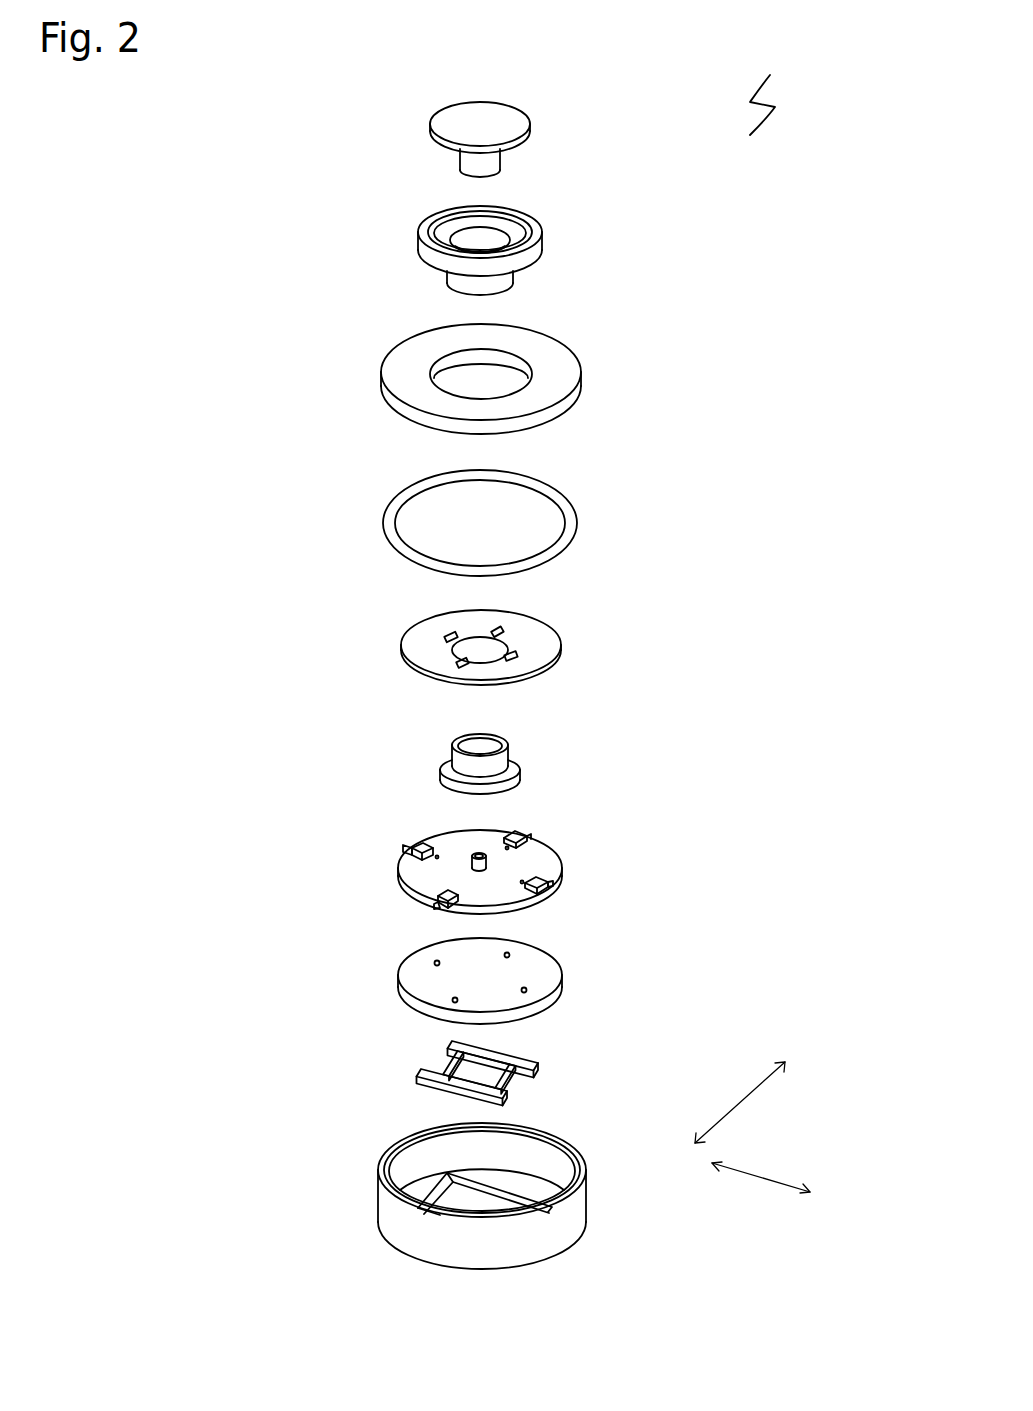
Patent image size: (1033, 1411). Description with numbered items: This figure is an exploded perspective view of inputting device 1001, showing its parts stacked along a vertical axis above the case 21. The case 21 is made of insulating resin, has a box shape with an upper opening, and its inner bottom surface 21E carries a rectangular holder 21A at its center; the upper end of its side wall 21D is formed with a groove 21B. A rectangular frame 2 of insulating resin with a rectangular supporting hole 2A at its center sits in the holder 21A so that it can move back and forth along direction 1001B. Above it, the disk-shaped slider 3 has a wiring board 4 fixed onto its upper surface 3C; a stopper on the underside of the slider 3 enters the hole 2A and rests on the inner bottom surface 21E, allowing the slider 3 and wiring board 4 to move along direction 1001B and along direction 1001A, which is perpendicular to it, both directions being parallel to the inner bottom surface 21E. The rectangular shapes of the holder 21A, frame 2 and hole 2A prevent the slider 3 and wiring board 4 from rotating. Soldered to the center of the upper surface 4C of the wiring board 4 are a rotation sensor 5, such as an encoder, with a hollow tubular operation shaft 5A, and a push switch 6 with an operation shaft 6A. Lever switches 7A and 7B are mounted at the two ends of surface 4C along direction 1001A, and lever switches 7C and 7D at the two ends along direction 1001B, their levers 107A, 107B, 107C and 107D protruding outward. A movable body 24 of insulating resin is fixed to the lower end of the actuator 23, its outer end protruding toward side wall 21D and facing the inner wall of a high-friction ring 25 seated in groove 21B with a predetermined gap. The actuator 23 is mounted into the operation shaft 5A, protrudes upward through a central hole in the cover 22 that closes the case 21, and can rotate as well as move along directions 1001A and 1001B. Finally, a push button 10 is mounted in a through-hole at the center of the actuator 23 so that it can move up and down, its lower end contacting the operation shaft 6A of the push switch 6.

The inputting device 1001 is at (780, 88).
The direction 1001A is at (735, 1107).
The direction 1001B is at (765, 1180).
The push button 10 is at (530, 124).
The actuator 23 is at (543, 250).
The cover 22 is at (581, 372).
The ring 25 is at (575, 513).
The movable body 24 is at (562, 642).
The rotation sensor 5 is at (455, 737).
The operation shaft 5A is at (473, 748).
The wiring board 4 is at (477, 884).
The upper surface of wiring board 4C is at (466, 917).
The push switch 6 is at (575, 845).
The operation shaft of push switch 6A is at (488, 857).
The lever switch 7A is at (506, 837).
The lever switch 7B is at (440, 895).
The lever switch 7C is at (534, 889).
The lever switch 7D is at (413, 856).
The lever 107A is at (517, 834).
The lever 107B is at (438, 905).
The lever 107C is at (546, 884).
The lever 107D is at (406, 848).
The slider 3 is at (530, 981).
The upper surface of slider 3C is at (537, 983).
The frame 2 is at (460, 1059).
The supporting hole 2A is at (475, 1072).
The case 21 is at (460, 1191).
The holder 21A is at (468, 1207).
The groove 21B is at (396, 1157).
The side wall 21D is at (408, 1222).
The inner bottom surface 21E is at (515, 1183).